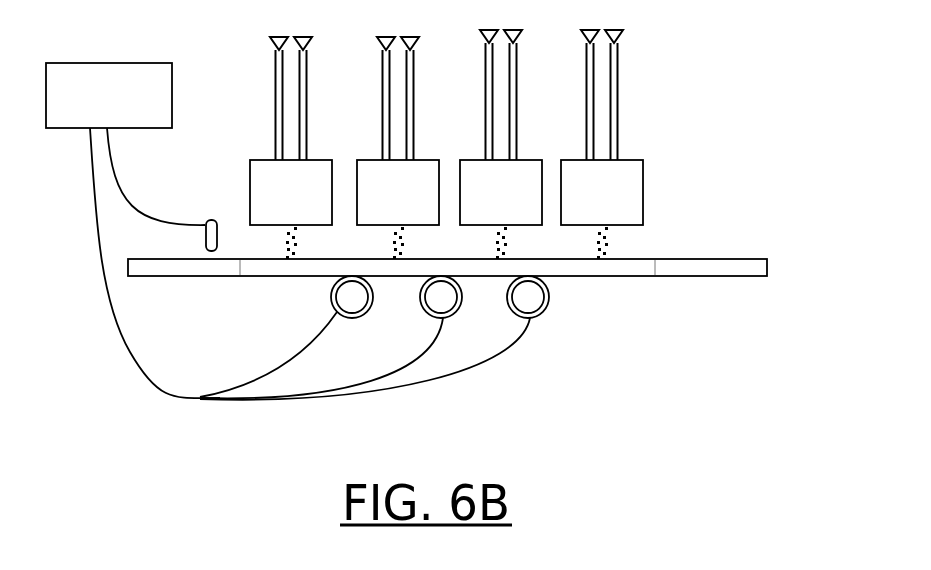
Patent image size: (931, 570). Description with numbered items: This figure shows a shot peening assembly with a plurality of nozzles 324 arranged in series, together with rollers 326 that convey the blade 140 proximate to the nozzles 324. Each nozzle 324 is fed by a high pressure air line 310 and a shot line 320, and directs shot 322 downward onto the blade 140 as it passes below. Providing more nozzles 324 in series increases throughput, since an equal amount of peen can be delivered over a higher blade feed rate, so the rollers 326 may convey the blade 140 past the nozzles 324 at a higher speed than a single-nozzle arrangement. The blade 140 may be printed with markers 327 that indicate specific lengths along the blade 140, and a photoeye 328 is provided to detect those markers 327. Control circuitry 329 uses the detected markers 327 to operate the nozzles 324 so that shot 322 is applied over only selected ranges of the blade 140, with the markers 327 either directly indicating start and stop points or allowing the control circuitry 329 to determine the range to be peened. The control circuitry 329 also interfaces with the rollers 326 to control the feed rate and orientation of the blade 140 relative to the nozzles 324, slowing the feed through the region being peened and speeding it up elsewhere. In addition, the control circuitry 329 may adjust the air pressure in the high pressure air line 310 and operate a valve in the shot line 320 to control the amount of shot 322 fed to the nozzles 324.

The control circuitry 329 is at (144, 66).
The photoeye 328 is at (205, 230).
The nozzle 324 is at (249, 186).
The high pressure air line 310 is at (276, 121).
The shot line 320 is at (307, 87).
The shot 322 is at (628, 243).
The blade 140 is at (764, 260).
The markers 327 is at (240, 277).
The rollers 326 is at (353, 302).